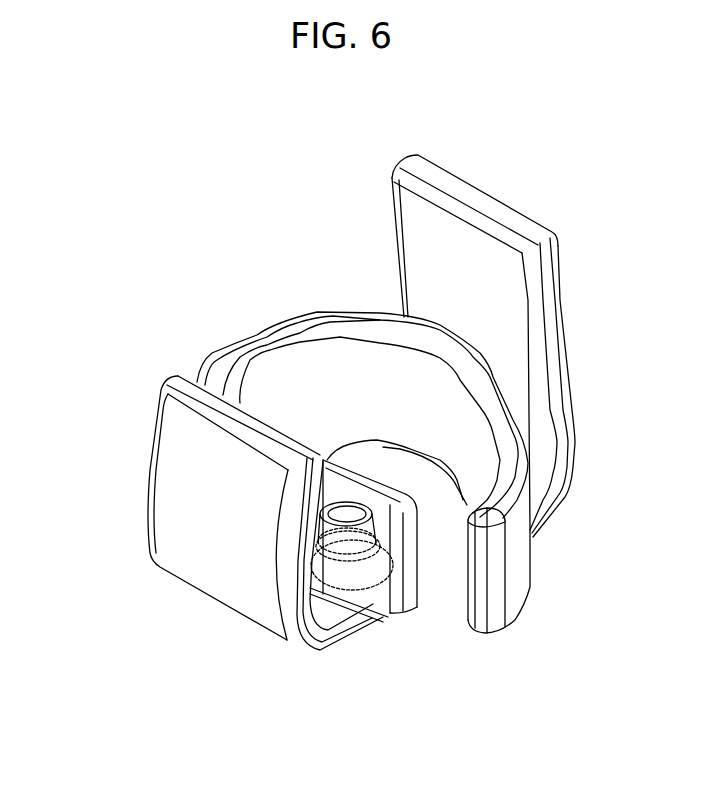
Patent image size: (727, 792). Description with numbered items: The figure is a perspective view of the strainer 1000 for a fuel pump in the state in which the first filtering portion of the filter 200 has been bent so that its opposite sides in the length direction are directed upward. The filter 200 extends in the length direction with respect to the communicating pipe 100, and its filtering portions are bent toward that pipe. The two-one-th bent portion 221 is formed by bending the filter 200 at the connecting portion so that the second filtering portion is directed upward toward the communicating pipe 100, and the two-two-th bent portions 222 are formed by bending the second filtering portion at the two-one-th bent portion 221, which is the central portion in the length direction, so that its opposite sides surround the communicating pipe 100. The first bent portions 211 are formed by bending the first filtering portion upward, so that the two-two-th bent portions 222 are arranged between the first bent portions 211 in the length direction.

The strainer for a fuel pump 1000 is at (248, 171).
The filter 200 is at (570, 513).
The first bent portions 211 is at (185, 487).
The 2-1-th bent portion 221 is at (297, 373).
The 2-2-th bent portions 222 is at (520, 588).
The communicating pipe 100 is at (327, 590).